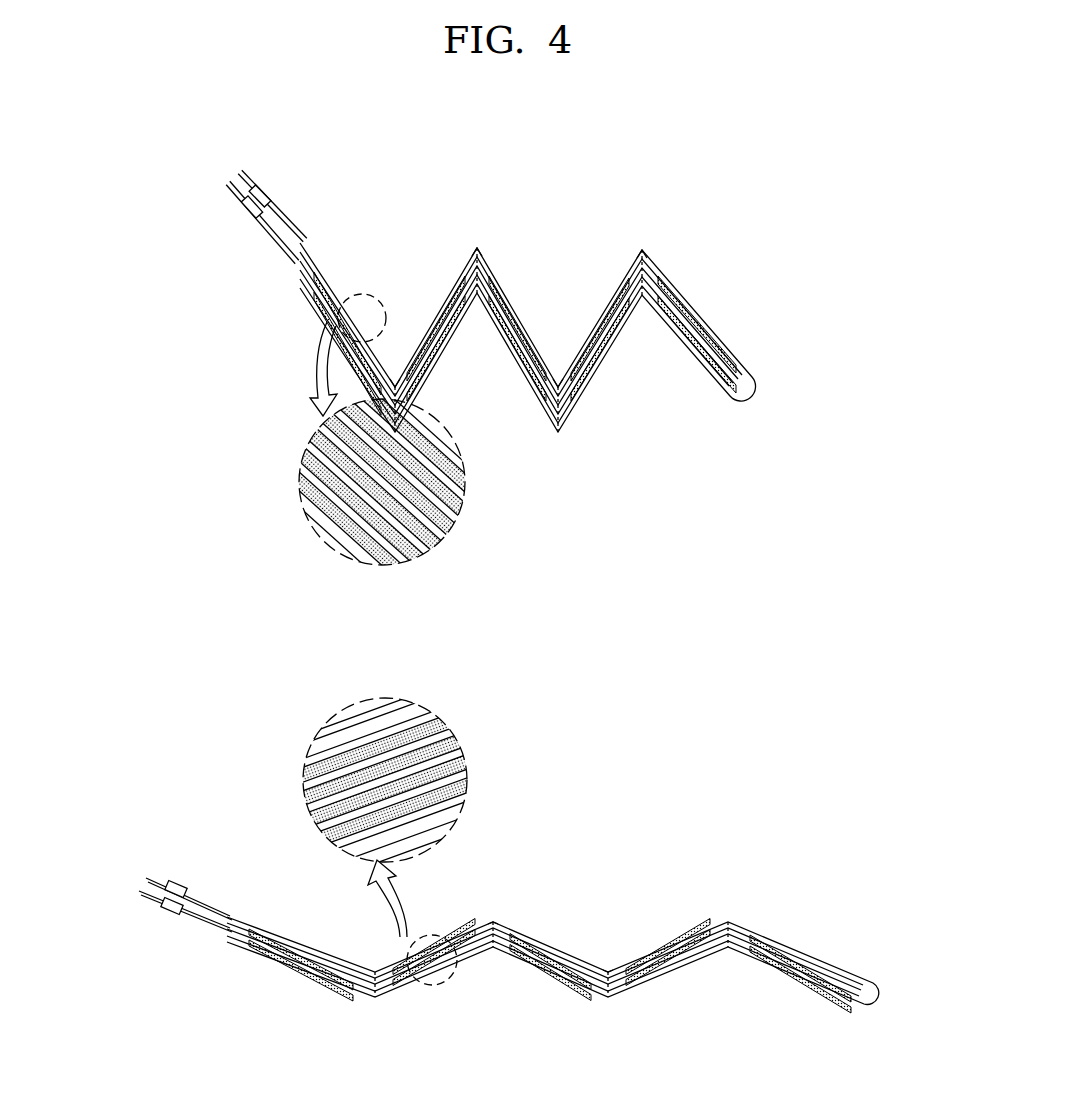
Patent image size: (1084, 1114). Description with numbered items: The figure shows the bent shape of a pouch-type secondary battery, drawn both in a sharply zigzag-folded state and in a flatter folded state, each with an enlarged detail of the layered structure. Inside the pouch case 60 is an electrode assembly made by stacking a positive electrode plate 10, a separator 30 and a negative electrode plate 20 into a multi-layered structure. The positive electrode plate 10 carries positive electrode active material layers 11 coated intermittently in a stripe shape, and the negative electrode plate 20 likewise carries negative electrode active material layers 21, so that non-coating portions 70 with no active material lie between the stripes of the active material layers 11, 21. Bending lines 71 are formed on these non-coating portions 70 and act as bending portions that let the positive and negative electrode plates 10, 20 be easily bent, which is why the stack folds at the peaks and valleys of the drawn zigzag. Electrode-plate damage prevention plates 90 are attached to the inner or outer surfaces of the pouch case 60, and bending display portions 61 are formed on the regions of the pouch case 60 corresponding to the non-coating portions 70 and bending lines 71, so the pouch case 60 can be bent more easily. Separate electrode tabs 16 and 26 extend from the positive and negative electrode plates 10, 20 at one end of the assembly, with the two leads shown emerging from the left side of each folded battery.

The positive electrode plate 10 is at (657, 259).
The positive electrode active material layer 11 is at (684, 298).
The electrode tab 16 is at (262, 182).
The negative electrode plate 20 is at (643, 298).
The negative electrode active material layer 21 is at (699, 326).
The electrode tab 26 is at (238, 222).
The separator 30 is at (628, 271).
The pouch case 60 is at (323, 248).
The bending display portion 61 is at (478, 246).
The non-coating portion 70 is at (633, 246).
The bending line 71 is at (549, 623).
The electrode-plate damage prevention plate 90 is at (665, 280).